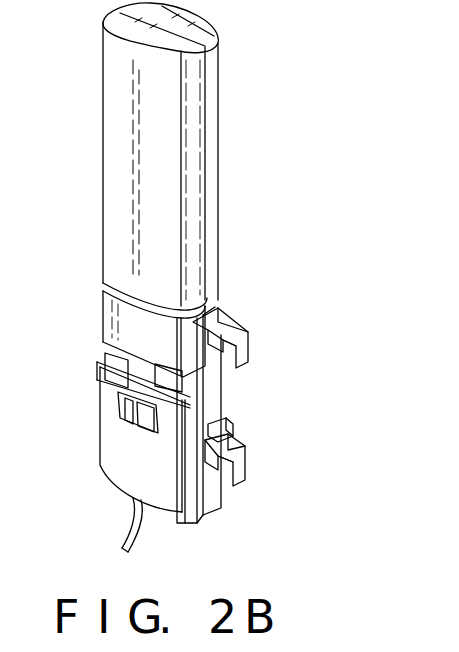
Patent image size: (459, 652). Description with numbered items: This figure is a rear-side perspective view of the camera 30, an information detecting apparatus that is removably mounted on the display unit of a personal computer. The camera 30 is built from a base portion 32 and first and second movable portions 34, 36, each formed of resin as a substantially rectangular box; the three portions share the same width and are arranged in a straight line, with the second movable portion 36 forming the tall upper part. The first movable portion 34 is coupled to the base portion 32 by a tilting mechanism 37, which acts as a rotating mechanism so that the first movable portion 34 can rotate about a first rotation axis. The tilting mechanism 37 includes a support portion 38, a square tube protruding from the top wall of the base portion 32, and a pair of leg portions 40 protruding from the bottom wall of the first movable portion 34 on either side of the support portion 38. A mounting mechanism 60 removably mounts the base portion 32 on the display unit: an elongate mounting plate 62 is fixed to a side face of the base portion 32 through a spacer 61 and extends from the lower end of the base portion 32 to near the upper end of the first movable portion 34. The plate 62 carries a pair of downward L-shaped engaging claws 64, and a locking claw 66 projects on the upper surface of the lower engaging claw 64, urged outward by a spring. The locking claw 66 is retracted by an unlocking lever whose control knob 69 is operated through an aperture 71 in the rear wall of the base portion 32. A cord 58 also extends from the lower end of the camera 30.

The camera 30 is at (228, 93).
The base portion 32 is at (101, 466).
The first movable portion 34 is at (104, 308).
The second movable portion 36 is at (211, 216).
The tilting mechanism 37 is at (96, 335).
The support portion 38 is at (108, 382).
The leg portions 40 is at (103, 348).
The cord 58 is at (124, 526).
The mounting mechanism 60 is at (259, 352).
The spacer 61 is at (180, 525).
The mounting plate 62 is at (208, 518).
The engaging claws 64 is at (240, 326).
The locking claw 66 is at (234, 428).
The control knob 69 is at (133, 431).
The aperture 71 is at (117, 428).